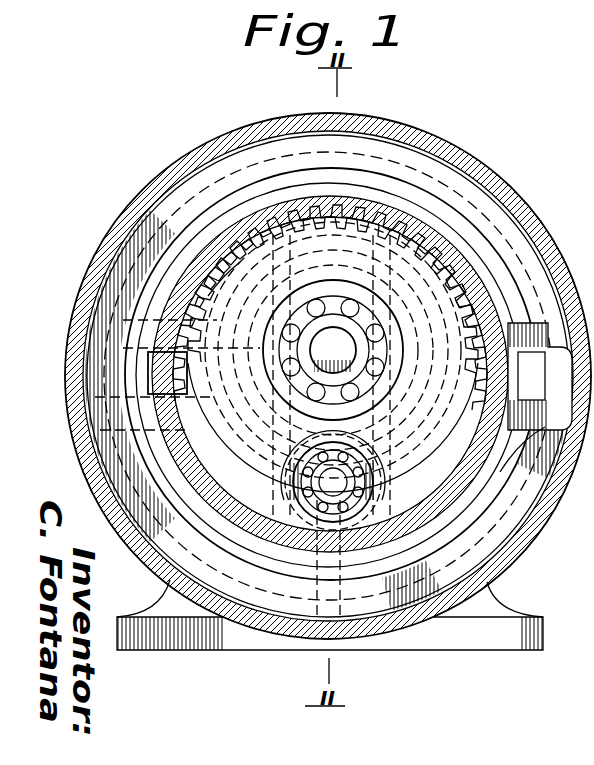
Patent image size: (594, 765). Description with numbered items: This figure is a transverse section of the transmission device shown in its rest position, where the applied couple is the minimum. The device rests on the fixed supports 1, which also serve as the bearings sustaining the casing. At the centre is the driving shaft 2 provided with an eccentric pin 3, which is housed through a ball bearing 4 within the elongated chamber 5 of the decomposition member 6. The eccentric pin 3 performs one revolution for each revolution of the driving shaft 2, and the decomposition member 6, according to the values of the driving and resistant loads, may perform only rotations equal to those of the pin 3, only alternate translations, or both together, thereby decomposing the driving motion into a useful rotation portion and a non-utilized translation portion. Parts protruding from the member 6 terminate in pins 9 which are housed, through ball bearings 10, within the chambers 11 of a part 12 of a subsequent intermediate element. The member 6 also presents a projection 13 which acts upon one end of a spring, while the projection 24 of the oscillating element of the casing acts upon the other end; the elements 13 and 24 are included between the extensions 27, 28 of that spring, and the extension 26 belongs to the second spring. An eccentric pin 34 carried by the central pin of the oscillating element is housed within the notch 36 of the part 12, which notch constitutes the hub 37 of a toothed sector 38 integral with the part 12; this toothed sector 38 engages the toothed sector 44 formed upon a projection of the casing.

The fixed supports 1 is at (546, 603).
The driving shaft 2 is at (358, 349).
The eccentric pin 3 is at (276, 450).
The ball bearing 4 is at (300, 374).
The elongated chamber 5 is at (396, 337).
The decomposition member 6 is at (393, 288).
The pins 9 is at (330, 258).
The ball bearings 10 is at (256, 222).
The chambers 11 is at (378, 546).
The part of element 12 is at (312, 180).
The projection 13 is at (180, 397).
The projection 24 is at (148, 376).
The extension of spring 16 26 is at (482, 488).
The extension of spring 15 27 is at (150, 370).
The extension of spring 15 28 is at (122, 430).
The eccentric pin 34 is at (374, 380).
The notch 36 is at (372, 398).
The hub 37 is at (372, 470).
The toothed sector 38 is at (470, 311).
The toothed sector 44 is at (206, 293).